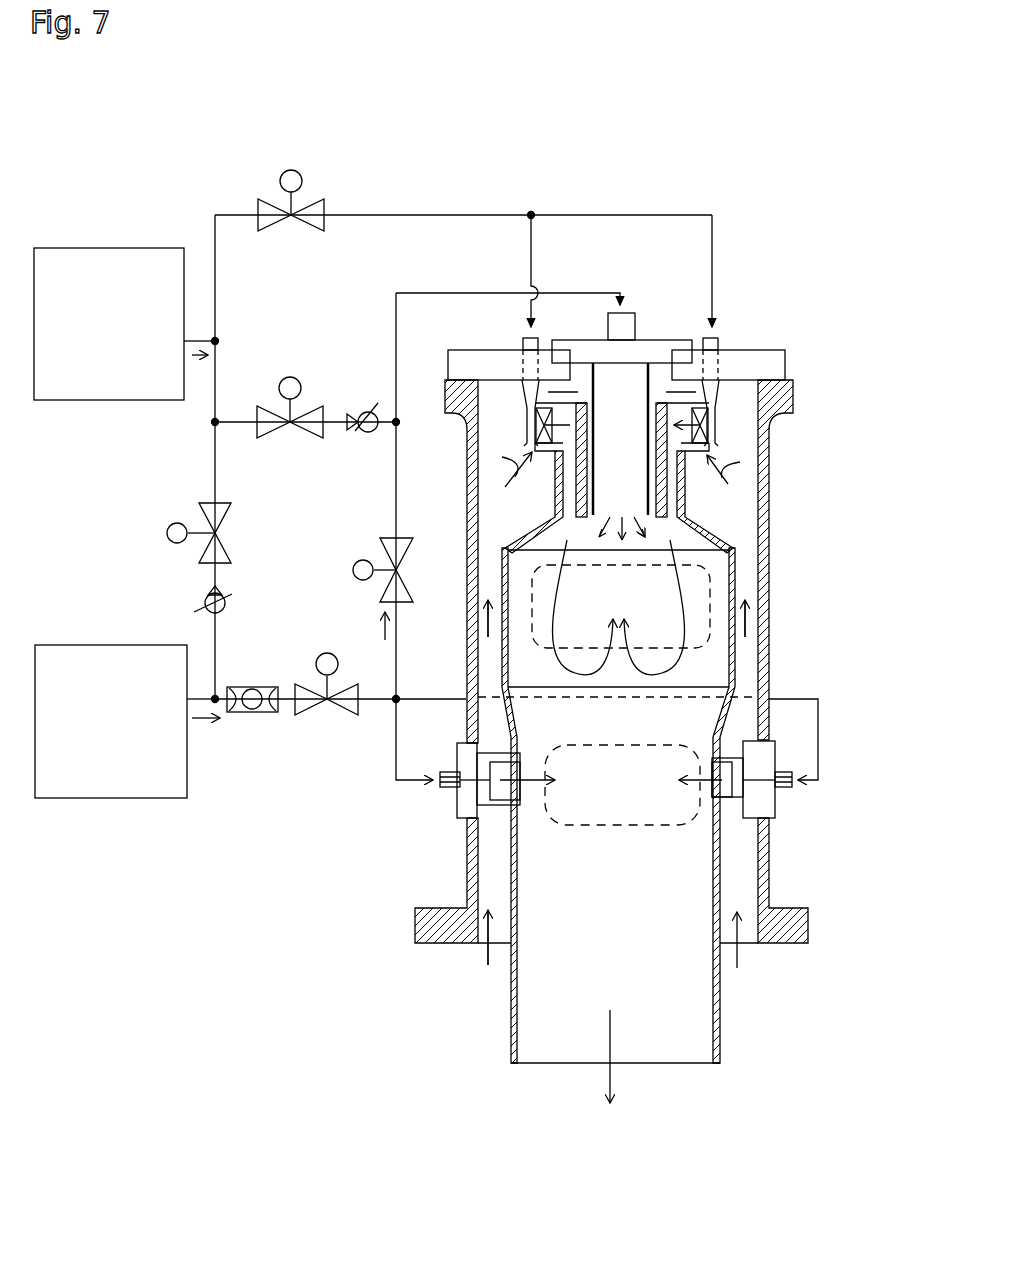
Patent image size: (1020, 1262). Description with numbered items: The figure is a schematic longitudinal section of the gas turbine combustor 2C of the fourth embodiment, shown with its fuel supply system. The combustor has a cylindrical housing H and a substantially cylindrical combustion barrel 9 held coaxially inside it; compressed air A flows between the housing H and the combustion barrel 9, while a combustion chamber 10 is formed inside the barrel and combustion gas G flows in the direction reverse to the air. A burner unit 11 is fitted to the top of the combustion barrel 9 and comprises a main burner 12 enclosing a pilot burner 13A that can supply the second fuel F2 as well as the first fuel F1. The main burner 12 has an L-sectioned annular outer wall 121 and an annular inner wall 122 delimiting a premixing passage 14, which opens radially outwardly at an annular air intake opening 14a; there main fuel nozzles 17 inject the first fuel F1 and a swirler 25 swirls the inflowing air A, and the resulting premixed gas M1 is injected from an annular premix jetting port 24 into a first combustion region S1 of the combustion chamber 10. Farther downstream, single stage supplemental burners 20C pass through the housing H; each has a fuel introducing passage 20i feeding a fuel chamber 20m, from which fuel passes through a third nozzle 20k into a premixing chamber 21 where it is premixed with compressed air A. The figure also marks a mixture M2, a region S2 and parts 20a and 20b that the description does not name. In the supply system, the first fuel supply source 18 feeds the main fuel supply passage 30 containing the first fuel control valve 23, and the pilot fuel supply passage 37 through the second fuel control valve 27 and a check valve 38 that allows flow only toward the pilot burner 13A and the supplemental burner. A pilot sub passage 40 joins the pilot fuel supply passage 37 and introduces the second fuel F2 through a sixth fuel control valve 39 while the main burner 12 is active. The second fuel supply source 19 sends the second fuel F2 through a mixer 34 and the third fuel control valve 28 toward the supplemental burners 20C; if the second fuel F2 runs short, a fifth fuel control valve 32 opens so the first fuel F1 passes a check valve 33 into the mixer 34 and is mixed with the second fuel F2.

The first fuel supply source 18 is at (155, 248).
The second fuel supply source 19 is at (165, 645).
The first fuel control valve 23 is at (297, 203).
The second fuel control valve 27 is at (300, 405).
The third fuel control valve 28 is at (340, 680).
The main fuel supply passage 30 is at (440, 215).
The pilot fuel supply passage 37 is at (440, 293).
The pilot sub passage 40 is at (400, 436).
The fifth fuel control valve 32 is at (222, 505).
The check valve 33 is at (222, 605).
The mixer 34 is at (255, 712).
The check valve 38 is at (358, 432).
The sixth fuel control valve 39 is at (380, 592).
The gas turbine combustor 2C is at (740, 328).
The burner unit 11 is at (332, 474).
The pilot burner 13A is at (632, 318).
The main burner 12 is at (553, 508).
The main fuel nozzle 17 is at (524, 412).
The swirler 25 is at (535, 412).
The premixing passage 14 is at (667, 487).
The air intake opening 14a is at (708, 432).
The annular inner wall 122 is at (685, 507).
The L-sectioned annular outer wall 121 is at (685, 523).
The annular premix jetting port 24 is at (540, 526).
The combustion barrel 9 is at (736, 576).
The combustion chamber 10 is at (634, 676).
The fuel introducing passage 20i is at (452, 772).
The third nozzle 20k is at (504, 752).
The fuel chamber 20m is at (412, 872).
The nozzle body 20a is at (456, 780).
The supplemental burner 20C is at (460, 800).
The nozzle tip portion 20b is at (496, 806).
The premixing chamber 21 is at (520, 790).
The compressed air A is at (758, 968).
The first fuel F1 is at (194, 356).
The second fuel F2 is at (383, 623).
The premixed gas M1 is at (560, 593).
The second mixture M2 is at (558, 775).
The first combustion region S1 is at (533, 628).
The second combustion space S2 is at (622, 815).
The combustion gas G is at (612, 1076).
The housing H is at (769, 660).